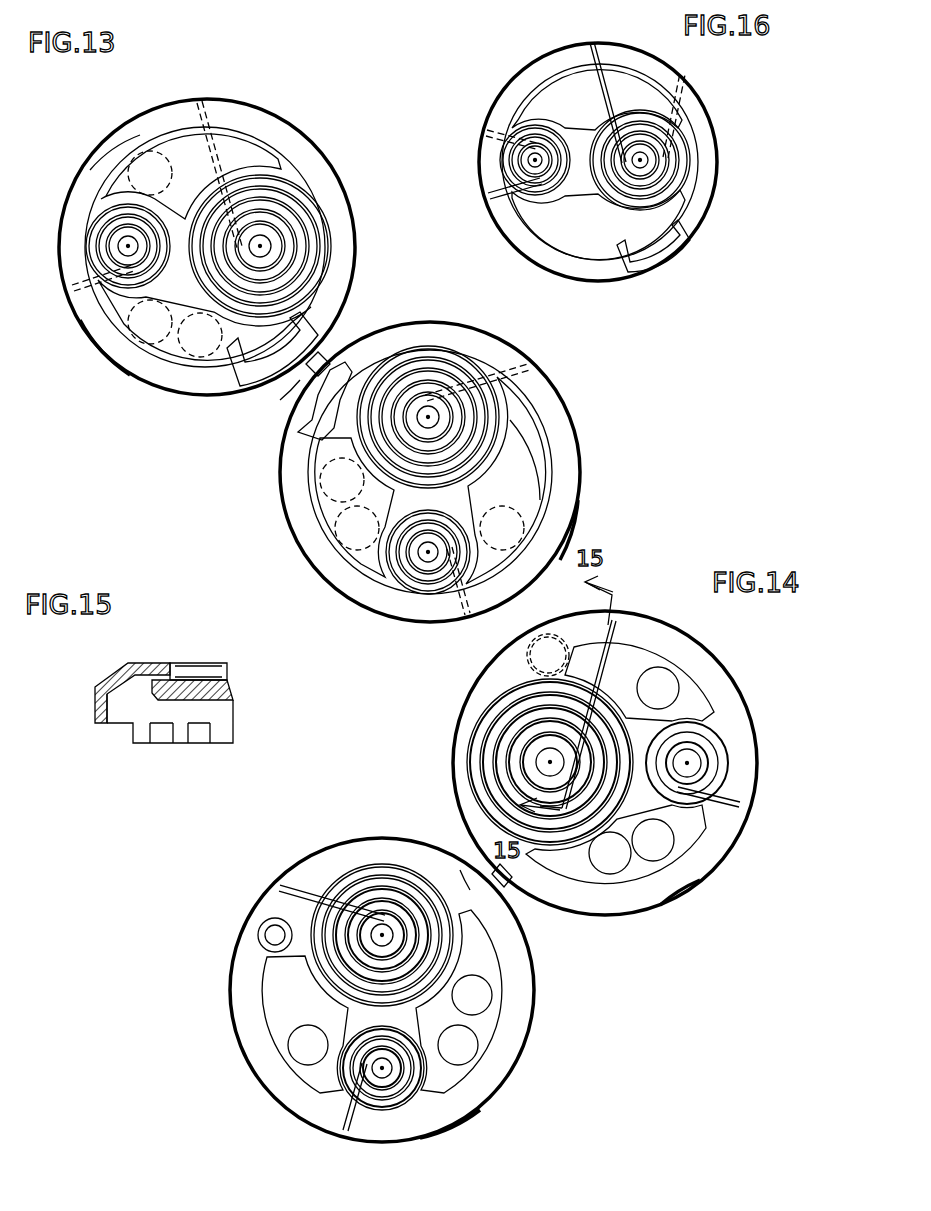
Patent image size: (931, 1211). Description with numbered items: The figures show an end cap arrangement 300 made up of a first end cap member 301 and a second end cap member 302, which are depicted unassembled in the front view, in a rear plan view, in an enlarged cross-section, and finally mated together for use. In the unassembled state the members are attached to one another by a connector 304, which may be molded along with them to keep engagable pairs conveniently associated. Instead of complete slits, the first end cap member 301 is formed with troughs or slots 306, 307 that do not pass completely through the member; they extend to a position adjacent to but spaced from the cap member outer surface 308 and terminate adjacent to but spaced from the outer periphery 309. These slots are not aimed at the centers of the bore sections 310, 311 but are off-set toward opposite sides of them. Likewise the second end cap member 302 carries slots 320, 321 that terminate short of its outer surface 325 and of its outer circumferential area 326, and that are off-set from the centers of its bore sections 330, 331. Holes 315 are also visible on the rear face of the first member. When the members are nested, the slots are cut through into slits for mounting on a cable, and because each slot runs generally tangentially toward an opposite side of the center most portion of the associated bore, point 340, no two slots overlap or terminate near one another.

In FIG. 13, the end cap arrangement 300 is at (265, 427).
In FIG. 14, the end cap arrangement 300 is at (588, 945).
In FIG. 13, the first end cap member 301 is at (490, 345).
In FIG. 14, the first end cap member 301 is at (286, 868).
In FIG. 13, the second end cap member 302 is at (318, 165).
In FIG. 14, the second end cap member 302 is at (738, 688).
In FIG. 15, the second end cap member 302 is at (93, 697).
In FIG. 13, the connector 304 is at (320, 356).
In FIG. 14, the connector 304 is at (508, 885).
In FIG. 13, the slot 306 is at (545, 385).
In FIG. 16, the slot 306 is at (698, 95).
In FIG. 14, the slot 306 is at (305, 880).
In FIG. 13, the slot 307 is at (460, 605).
In FIG. 16, the slot 307 is at (497, 125).
In FIG. 14, the slot 307 is at (350, 1118).
In FIG. 13, the cap member outer surface 308 is at (530, 452).
In FIG. 13, the outer periphery 309 is at (582, 522).
In FIG. 14, the outer periphery 309 is at (470, 1128).
In FIG. 13, the bore section 310 is at (430, 432).
In FIG. 13, the bore section 311 is at (430, 560).
In FIG. 14, the alignment holes 315 is at (478, 998).
In FIG. 13, the slot 320 is at (205, 120).
In FIG. 16, the slot 320 is at (588, 55).
In FIG. 14, the slot 320 is at (610, 628).
In FIG. 15, the slot 320 is at (152, 665).
In FIG. 13, the slot 321 is at (87, 293).
In FIG. 16, the slot 321 is at (492, 212).
In FIG. 14, the slot 321 is at (722, 790).
In FIG. 13, the outer surface 325 is at (128, 132).
In FIG. 13, the outer circumferential area 326 is at (115, 370).
In FIG. 14, the outer circumferential area 326 is at (690, 897).
In FIG. 15, the outer circumferential area 326 is at (92, 713).
In FIG. 14, the bore section 330 is at (545, 755).
In FIG. 14, the bore section 331 is at (695, 765).
In FIG. 16, the point 340 is at (645, 163).